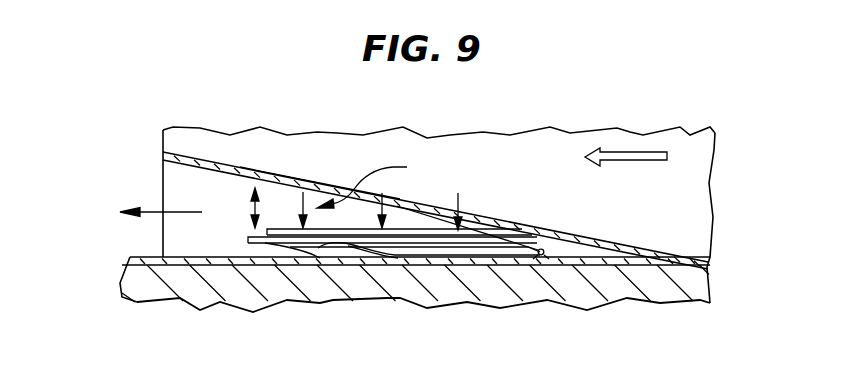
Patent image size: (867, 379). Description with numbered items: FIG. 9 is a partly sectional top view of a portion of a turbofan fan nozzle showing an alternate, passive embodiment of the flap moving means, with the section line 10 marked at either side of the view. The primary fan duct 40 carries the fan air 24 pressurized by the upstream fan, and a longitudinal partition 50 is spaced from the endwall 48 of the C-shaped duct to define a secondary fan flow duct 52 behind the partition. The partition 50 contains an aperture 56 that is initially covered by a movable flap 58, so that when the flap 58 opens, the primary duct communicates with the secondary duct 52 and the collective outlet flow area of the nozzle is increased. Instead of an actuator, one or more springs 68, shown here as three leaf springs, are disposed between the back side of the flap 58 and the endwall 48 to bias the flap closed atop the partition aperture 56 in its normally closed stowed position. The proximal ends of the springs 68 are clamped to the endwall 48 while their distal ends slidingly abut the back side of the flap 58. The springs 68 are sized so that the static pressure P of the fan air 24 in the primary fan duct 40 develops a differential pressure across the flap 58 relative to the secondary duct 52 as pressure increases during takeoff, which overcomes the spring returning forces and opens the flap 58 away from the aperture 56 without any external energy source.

The section line 10- 10 is at (122, 255).
The fan air 24 is at (634, 152).
The fan duct 40 is at (668, 212).
The endwall 48 is at (185, 298).
The partition 50 is at (208, 160).
The secondary fan flow duct 52 is at (205, 250).
The aperture 56 is at (302, 176).
The flap 58 is at (413, 228).
The springs 68 is at (318, 263).
The static pressure P is at (464, 208).